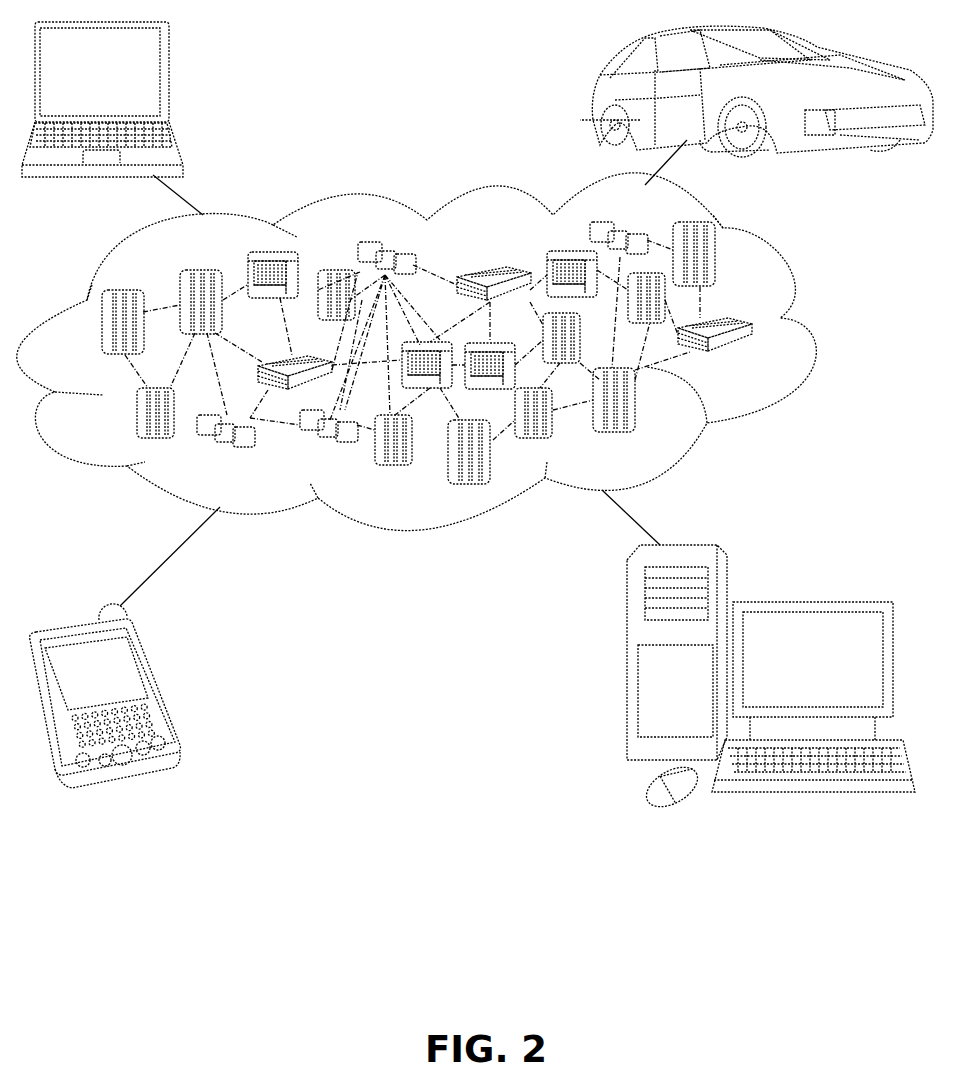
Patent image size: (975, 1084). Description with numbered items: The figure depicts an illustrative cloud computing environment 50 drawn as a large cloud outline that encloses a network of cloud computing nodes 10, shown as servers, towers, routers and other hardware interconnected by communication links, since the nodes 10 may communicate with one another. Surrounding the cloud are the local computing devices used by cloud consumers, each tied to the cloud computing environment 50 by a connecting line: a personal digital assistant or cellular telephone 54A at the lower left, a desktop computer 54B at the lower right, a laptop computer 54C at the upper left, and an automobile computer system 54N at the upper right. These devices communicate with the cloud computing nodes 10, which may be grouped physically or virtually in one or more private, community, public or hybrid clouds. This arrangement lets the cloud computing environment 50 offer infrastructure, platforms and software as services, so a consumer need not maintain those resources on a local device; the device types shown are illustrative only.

The cloud computing node 10 is at (752, 360).
The cloud computing environment 50 is at (810, 333).
The personal digital assistant or cellular telephone 54A is at (162, 688).
The desktop computer 54B is at (810, 602).
The laptop computer 54C is at (170, 80).
The automobile computer system 54N is at (597, 100).